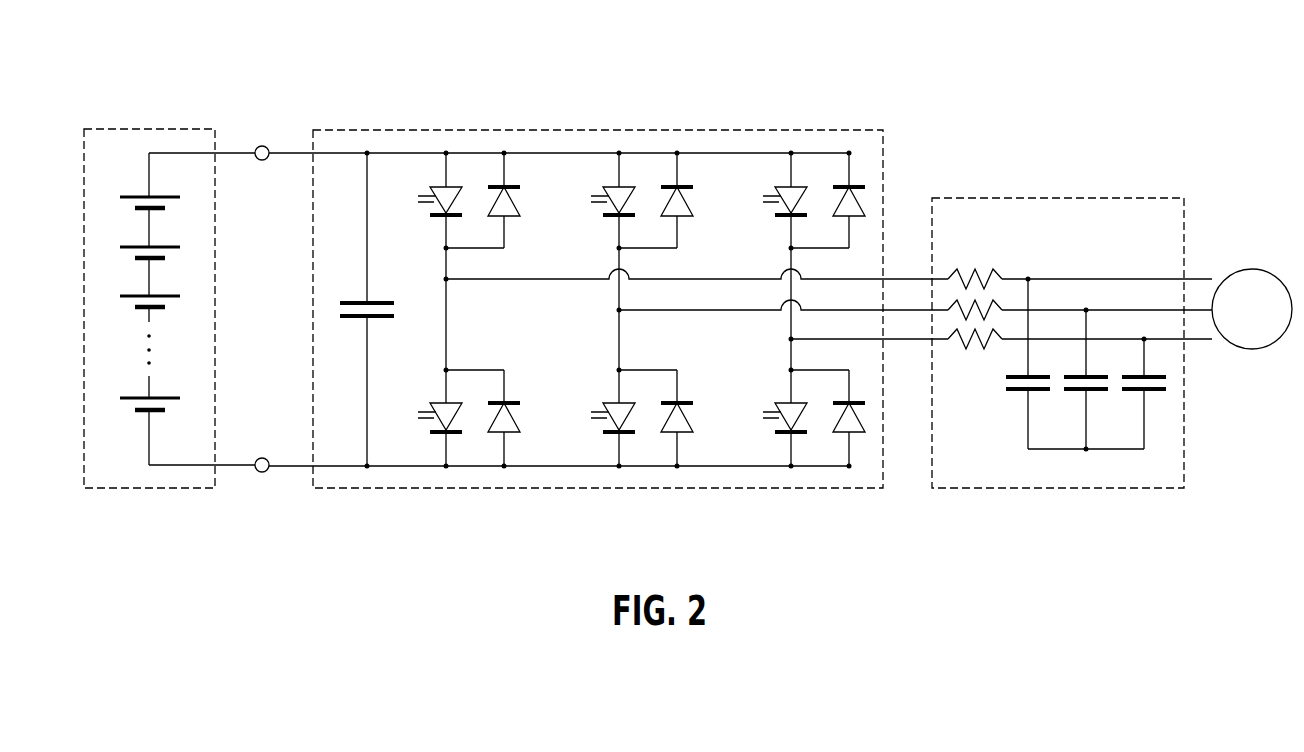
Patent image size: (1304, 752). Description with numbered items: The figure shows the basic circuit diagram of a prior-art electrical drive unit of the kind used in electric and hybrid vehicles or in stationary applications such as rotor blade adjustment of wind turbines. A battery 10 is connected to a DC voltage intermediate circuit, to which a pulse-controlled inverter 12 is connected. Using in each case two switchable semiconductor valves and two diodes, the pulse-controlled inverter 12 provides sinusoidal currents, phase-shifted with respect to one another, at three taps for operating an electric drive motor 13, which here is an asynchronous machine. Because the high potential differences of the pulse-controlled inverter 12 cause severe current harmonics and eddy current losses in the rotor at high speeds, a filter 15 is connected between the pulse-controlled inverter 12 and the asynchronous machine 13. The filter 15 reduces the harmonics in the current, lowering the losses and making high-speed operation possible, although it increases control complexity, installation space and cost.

The battery 10 is at (148, 129).
The pulse-controlled inverter 12 is at (726, 130).
The filter 15 is at (1062, 198).
The electric drive motor 13 is at (1253, 270).